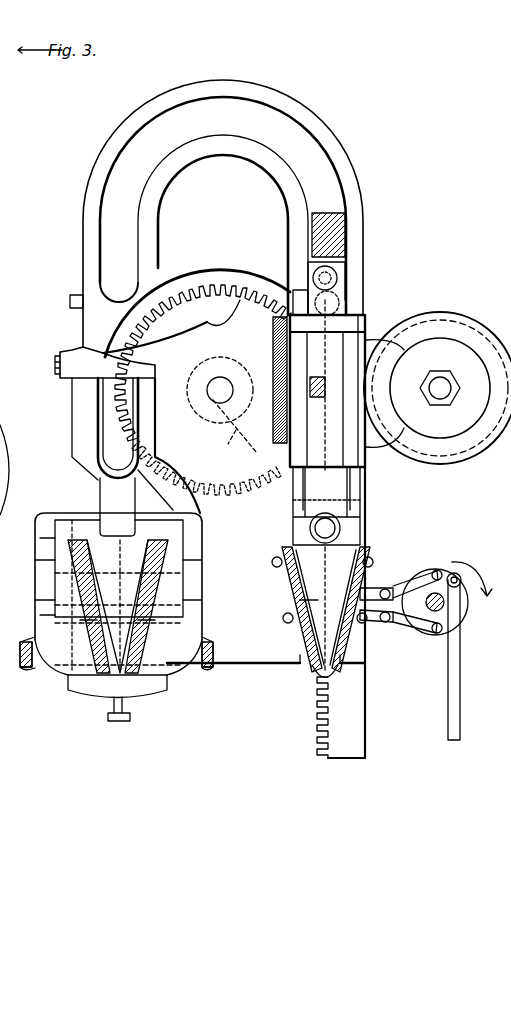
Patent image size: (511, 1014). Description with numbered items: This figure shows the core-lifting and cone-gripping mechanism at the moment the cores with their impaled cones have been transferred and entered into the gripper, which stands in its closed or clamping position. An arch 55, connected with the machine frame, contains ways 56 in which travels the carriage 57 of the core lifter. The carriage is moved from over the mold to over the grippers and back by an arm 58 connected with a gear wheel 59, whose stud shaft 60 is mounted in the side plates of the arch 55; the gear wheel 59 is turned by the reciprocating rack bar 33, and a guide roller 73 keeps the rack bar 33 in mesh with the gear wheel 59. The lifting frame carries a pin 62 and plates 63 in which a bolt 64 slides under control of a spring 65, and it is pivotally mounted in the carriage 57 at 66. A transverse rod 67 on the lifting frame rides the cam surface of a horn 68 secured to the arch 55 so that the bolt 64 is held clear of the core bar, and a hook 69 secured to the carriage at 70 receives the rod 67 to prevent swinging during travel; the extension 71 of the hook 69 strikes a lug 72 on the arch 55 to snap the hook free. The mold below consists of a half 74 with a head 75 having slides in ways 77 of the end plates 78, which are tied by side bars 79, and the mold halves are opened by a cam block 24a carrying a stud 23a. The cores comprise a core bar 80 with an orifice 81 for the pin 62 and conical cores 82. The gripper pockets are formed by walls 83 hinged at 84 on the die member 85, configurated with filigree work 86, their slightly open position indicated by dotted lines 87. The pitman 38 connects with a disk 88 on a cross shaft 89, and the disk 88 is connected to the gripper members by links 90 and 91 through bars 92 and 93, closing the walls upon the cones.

The arch 55 is at (214, 83).
The ways 56 is at (168, 148).
The carriage 57 is at (336, 226).
The arm 58 is at (226, 440).
The gear wheel 59 is at (197, 260).
The stud shaft 60 is at (214, 400).
The pin 62 is at (346, 492).
The plate 63 is at (366, 315).
The bolt 64 is at (290, 300).
The spring 65 is at (273, 355).
The pivot 66 is at (345, 262).
The transverse rod 67 is at (325, 390).
The horn 68 is at (61, 352).
The hook 69 is at (234, 391).
The hook pivot 70 is at (345, 298).
The extension 71 is at (268, 290).
The lug 72 is at (69, 300).
The guide roller 73 is at (446, 312).
The mold half 74 is at (70, 557).
The head 75 is at (60, 526).
The ways 77 is at (36, 590).
The end plate 78 is at (70, 505).
The side bar 79 is at (40, 538).
The core bar 80 is at (340, 508).
The orifice 81 is at (346, 518).
The conical core 82 is at (292, 590).
The wall 83 is at (306, 670).
The hinge 84 is at (272, 562).
The die member 85 is at (284, 550).
The filigree work 86 is at (300, 666).
The dotted lines 87 is at (284, 607).
The disk 88 is at (462, 606).
The cross shaft 89 is at (470, 564).
The link 90 is at (425, 578).
The link 91 is at (404, 626).
The bar 92 is at (382, 585).
The bar 93 is at (288, 624).
The rack bar 33 is at (357, 718).
The pitman 38 is at (460, 675).
The cam block 24a is at (70, 690).
The stud 23a is at (131, 718).